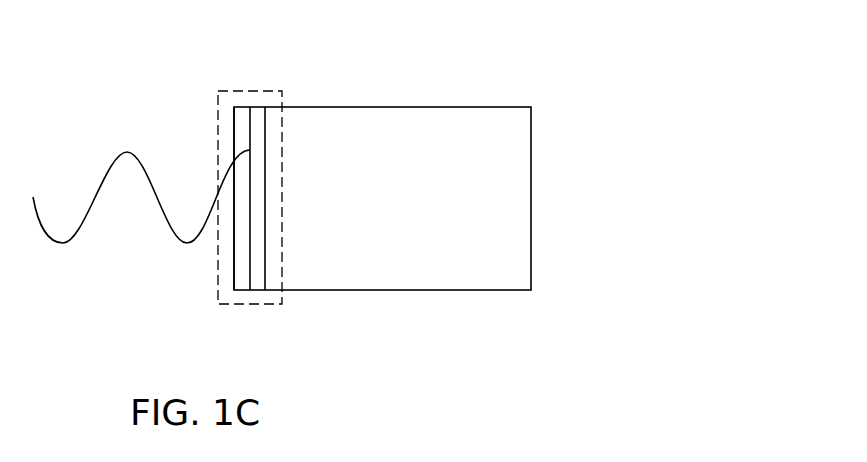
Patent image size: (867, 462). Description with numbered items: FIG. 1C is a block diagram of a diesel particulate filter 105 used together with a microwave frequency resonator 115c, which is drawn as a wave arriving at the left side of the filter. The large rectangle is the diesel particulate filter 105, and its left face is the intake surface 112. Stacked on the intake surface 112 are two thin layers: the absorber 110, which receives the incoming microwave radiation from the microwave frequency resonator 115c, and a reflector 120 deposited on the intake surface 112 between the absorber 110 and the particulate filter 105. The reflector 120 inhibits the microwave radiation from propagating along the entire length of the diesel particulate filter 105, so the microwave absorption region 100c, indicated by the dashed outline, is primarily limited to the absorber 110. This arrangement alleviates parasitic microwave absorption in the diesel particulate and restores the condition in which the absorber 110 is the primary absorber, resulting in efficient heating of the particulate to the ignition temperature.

The microwave absorption region 100c is at (243, 90).
The diesel particulate filter 105 is at (358, 107).
The absorber 110 is at (240, 285).
The intake surface 112 is at (233, 121).
The microwave frequency resonator 115c is at (127, 125).
The reflector 120 is at (262, 285).